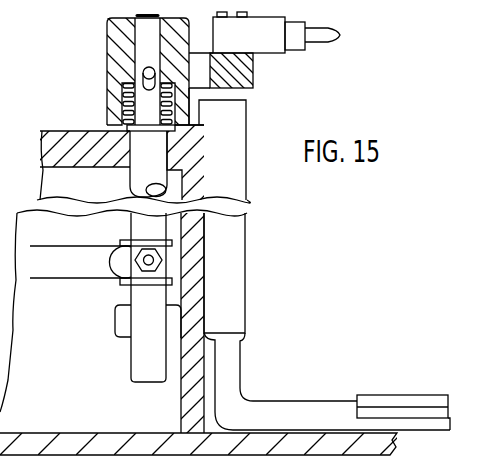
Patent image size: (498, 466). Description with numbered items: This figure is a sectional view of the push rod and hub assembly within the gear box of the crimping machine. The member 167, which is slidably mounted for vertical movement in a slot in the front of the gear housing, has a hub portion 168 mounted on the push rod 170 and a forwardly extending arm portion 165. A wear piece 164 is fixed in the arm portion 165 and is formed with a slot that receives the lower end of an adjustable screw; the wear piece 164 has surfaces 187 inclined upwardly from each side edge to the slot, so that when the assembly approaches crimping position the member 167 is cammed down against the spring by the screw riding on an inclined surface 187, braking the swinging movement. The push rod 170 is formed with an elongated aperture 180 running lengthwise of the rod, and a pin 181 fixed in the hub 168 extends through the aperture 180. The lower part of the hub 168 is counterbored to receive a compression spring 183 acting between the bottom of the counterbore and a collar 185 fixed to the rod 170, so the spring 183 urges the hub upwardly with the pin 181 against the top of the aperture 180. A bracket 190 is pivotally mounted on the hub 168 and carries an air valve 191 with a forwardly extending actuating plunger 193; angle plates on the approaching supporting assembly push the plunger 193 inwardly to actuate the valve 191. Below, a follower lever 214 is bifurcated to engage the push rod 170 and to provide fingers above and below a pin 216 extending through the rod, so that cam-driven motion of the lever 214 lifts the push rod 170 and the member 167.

The wear piece 164 is at (452, 412).
The forwardly extending arm portion 165 is at (323, 415).
The member 167 is at (232, 168).
The hub portion 168 is at (109, 60).
The push rod 170 is at (143, 168).
The elongated aperture 180 is at (140, 76).
The pin 181 is at (150, 67).
The compression spring 183 is at (122, 105).
The collar 185 is at (127, 128).
The inclined surfaces 187 is at (389, 402).
The bracket 190 is at (255, 69).
The air valve 191 is at (255, 44).
The actuating plunger 193 is at (340, 35).
The follower lever 214 is at (65, 258).
The pin 216 is at (147, 258).